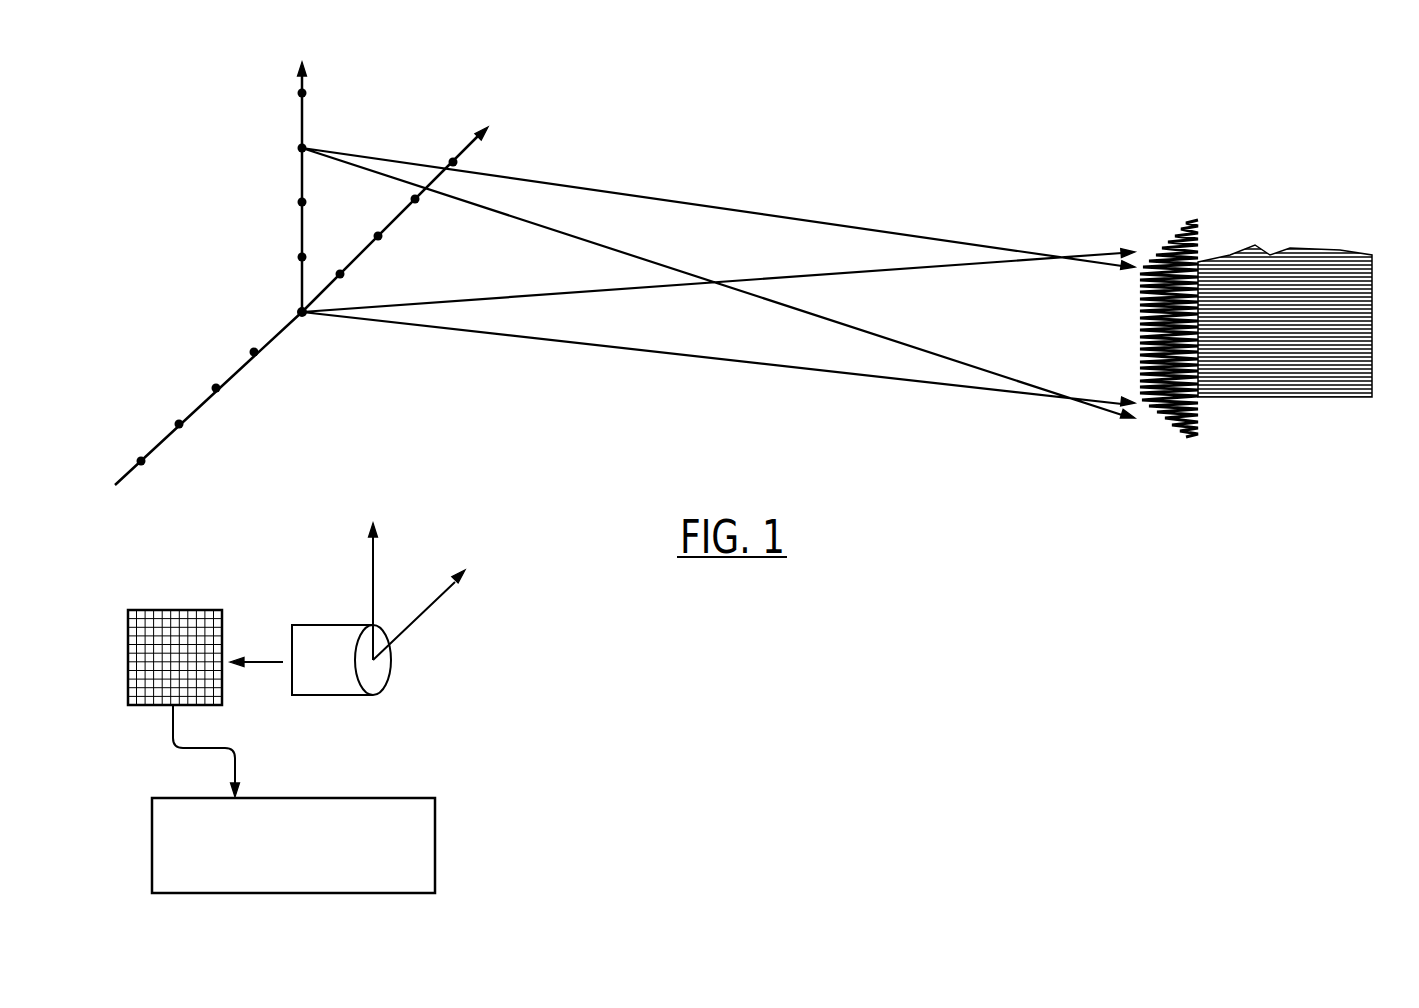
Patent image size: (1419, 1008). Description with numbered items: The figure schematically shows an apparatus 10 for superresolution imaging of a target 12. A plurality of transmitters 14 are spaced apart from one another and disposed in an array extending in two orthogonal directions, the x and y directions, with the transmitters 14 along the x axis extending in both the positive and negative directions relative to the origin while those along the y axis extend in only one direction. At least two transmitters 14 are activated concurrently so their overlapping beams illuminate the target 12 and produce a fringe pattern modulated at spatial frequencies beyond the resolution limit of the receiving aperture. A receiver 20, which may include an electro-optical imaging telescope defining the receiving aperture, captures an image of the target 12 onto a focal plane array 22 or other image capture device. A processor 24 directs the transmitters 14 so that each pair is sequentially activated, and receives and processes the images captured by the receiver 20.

The apparatus 10 is at (614, 114).
The target 12 is at (1279, 205).
The transmitters 14 is at (300, 148).
The receiver 20 is at (320, 640).
The focal plane array 22 is at (164, 620).
The processor 24 is at (385, 808).